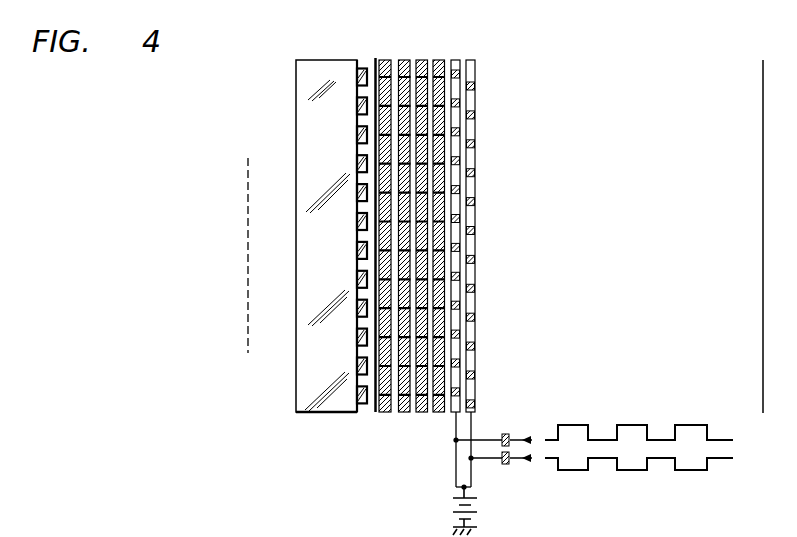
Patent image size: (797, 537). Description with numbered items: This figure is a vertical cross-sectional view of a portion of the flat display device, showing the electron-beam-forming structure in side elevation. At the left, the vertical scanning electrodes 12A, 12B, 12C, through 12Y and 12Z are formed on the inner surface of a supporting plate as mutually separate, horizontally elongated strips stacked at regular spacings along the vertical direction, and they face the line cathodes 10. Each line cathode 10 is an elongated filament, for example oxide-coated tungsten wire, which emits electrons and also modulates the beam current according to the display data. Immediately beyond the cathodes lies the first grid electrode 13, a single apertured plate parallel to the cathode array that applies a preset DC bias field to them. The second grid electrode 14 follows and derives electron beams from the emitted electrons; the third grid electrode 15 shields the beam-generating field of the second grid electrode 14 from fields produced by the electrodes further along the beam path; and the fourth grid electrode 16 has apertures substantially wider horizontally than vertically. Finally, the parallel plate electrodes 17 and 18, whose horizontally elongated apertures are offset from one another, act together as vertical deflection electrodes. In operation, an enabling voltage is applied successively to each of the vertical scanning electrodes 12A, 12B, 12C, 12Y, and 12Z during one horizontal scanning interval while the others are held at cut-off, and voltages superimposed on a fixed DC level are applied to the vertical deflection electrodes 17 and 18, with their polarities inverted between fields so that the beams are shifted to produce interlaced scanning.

The line cathodes 10 is at (374, 60).
The vertical scanning electrode 12A is at (763, 77).
The vertical scanning electrode 12B is at (357, 106).
The vertical scanning electrode 12C is at (357, 135).
The vertical scanning electrode 12Y is at (357, 366).
The vertical scanning electrode 12Z is at (357, 395).
The first grid electrode 13 is at (386, 60).
The second grid electrode 14 is at (405, 60).
The third grid electrode 15 is at (420, 60).
The fourth grid electrode 16 is at (442, 60).
The vertical deflection electrode 17 is at (456, 60).
The vertical deflection electrode 18 is at (472, 60).